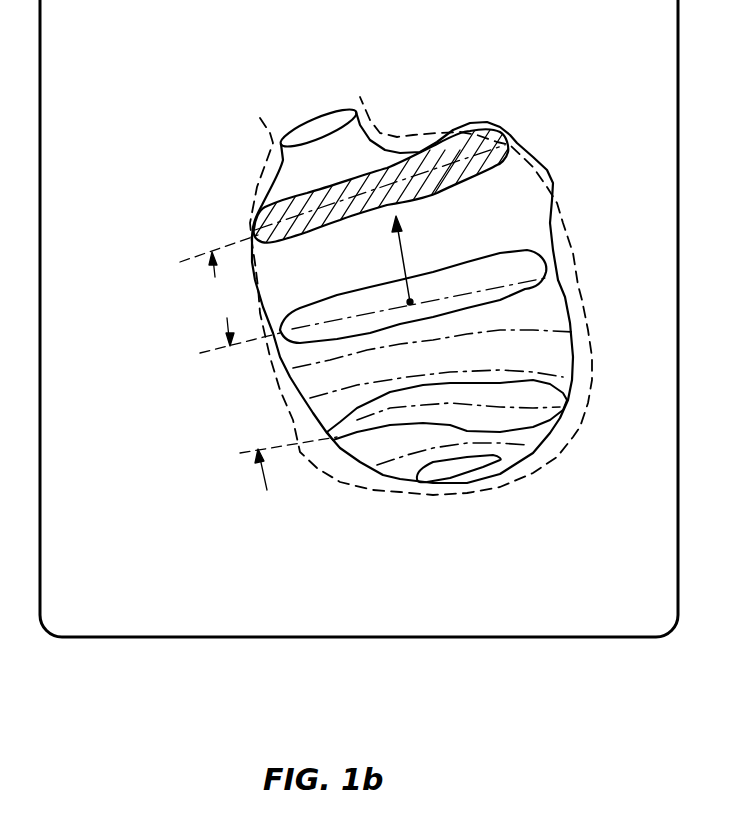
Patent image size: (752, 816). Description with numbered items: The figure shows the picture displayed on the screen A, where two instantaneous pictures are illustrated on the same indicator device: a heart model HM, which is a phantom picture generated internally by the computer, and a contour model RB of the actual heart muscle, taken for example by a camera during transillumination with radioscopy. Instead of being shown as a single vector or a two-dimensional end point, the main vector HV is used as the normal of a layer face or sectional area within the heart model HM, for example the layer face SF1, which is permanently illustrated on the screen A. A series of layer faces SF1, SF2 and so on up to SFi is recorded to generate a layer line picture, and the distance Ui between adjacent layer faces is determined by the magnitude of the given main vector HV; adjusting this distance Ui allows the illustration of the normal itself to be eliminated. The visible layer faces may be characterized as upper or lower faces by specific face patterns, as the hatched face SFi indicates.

The screen A is at (596, 627).
The heart model HM is at (570, 302).
The main vector HV is at (407, 253).
The layer face SFi is at (498, 155).
The layer face SF1 is at (560, 393).
The layer face SF2 is at (540, 264).
The distance between the layer faces Ui is at (258, 362).
The contour model RB is at (556, 441).